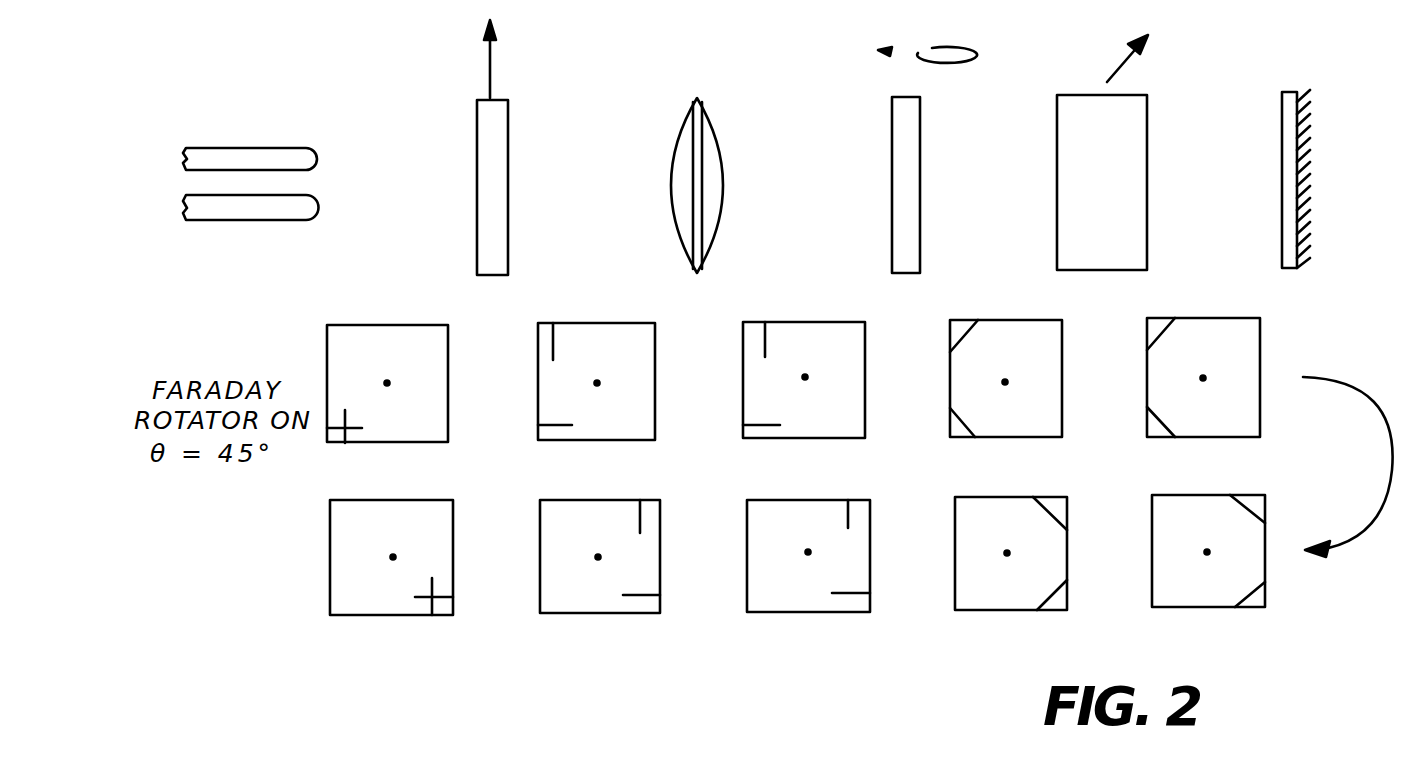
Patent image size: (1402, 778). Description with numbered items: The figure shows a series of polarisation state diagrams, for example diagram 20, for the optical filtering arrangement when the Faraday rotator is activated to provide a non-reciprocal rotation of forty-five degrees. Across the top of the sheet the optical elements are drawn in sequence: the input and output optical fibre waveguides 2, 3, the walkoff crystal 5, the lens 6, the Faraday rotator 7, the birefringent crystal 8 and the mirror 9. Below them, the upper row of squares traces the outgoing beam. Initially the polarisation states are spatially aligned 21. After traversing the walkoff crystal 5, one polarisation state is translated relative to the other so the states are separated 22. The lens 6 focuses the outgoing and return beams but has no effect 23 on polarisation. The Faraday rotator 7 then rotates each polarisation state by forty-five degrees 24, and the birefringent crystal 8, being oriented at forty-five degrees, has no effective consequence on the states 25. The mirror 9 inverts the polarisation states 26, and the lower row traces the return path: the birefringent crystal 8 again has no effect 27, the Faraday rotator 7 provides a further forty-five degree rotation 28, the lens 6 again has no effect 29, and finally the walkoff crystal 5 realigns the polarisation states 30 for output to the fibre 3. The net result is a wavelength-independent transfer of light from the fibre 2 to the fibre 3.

The input optical fibre waveguide 2 is at (280, 220).
The output optical fibre waveguide 3 is at (268, 148).
The walkoff crystal 5 is at (508, 128).
The lens 6 is at (720, 143).
The Faraday rotator 7 is at (920, 155).
The birefringent crystal 8 is at (1147, 130).
The mirror 9 is at (1290, 92).
The polarisation state diagram 20 is at (392, 325).
The spatially aligned polarisation states 21 is at (345, 445).
The separated polarisation states 22 is at (581, 323).
The polarisation states after lens (no effect) 23 is at (805, 322).
The polarisation states after Faraday rotator 24 is at (989, 320).
The polarisation states after birefringent crystal 25 is at (1209, 318).
The inverted polarisation states 26 is at (1152, 550).
The polarisation states after return through birefringent crystal 27 is at (955, 567).
The polarisation states after return rotation 28 is at (747, 567).
The polarisation states after return through lens 29 is at (540, 577).
The aligned polarisation states for output 30 is at (328, 578).